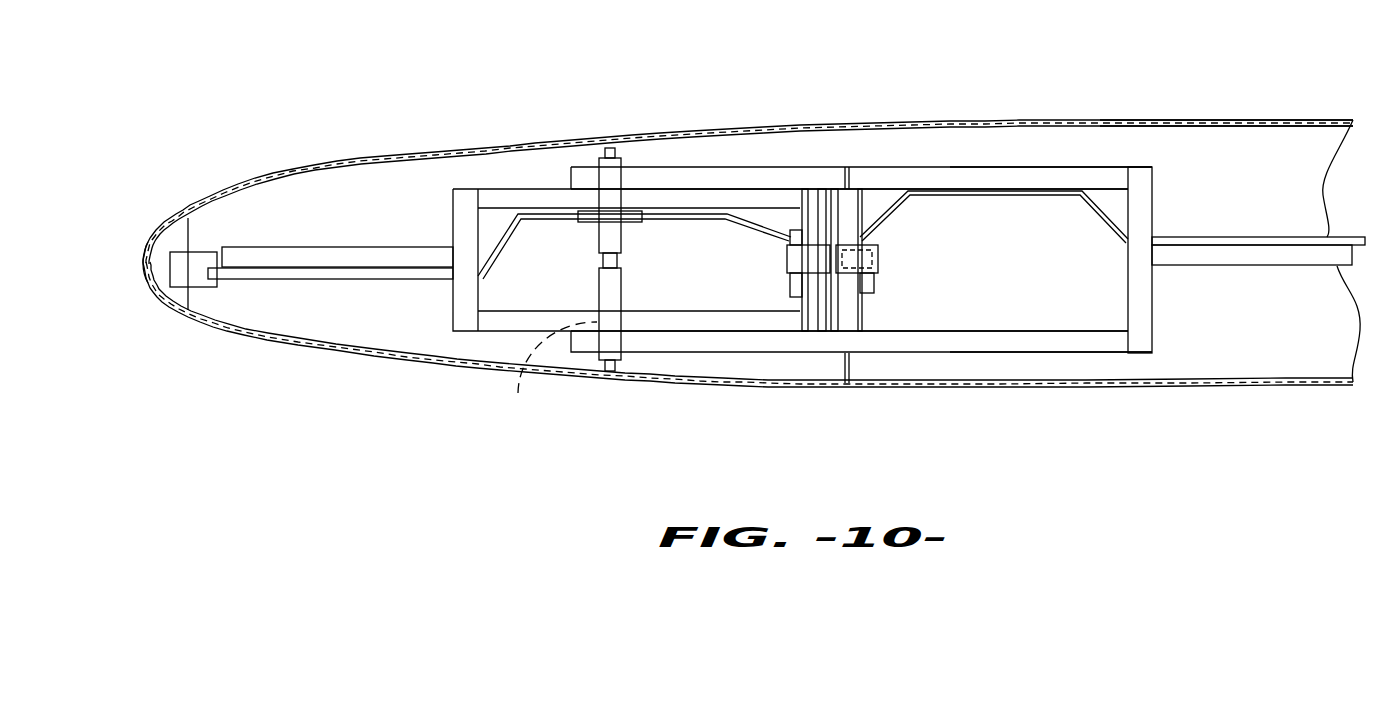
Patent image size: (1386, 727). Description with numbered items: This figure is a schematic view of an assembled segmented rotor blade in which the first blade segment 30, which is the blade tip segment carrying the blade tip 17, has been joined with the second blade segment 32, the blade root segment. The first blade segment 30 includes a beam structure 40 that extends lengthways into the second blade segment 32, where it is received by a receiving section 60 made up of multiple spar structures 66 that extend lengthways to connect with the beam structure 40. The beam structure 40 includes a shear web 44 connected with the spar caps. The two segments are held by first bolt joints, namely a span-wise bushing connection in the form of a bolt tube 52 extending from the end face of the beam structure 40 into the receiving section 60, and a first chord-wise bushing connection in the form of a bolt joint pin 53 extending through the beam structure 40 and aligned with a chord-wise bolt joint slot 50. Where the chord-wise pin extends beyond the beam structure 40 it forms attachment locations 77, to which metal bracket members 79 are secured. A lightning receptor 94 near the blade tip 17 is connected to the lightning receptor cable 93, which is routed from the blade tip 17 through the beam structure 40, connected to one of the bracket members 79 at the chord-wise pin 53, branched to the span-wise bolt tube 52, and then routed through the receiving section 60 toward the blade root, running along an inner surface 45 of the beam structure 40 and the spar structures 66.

The blade tip 17 is at (142, 265).
The first blade segment 30 is at (275, 183).
The second blade segment 32 is at (1233, 120).
The beam structure 40 is at (533, 188).
The shear web 44 is at (380, 247).
The inner surface 45 is at (788, 212).
The bolt joint slot 50 is at (551, 378).
The bolt tube 52 is at (836, 243).
The bolt joint pin 53 is at (624, 338).
The receiving section 60 is at (722, 163).
The spar structures 66 is at (954, 167).
The attachment locations 77 is at (608, 152).
The bracket members 79 is at (591, 222).
The lightning receptor cable 93 is at (347, 280).
The lightning receptor 94 is at (205, 290).